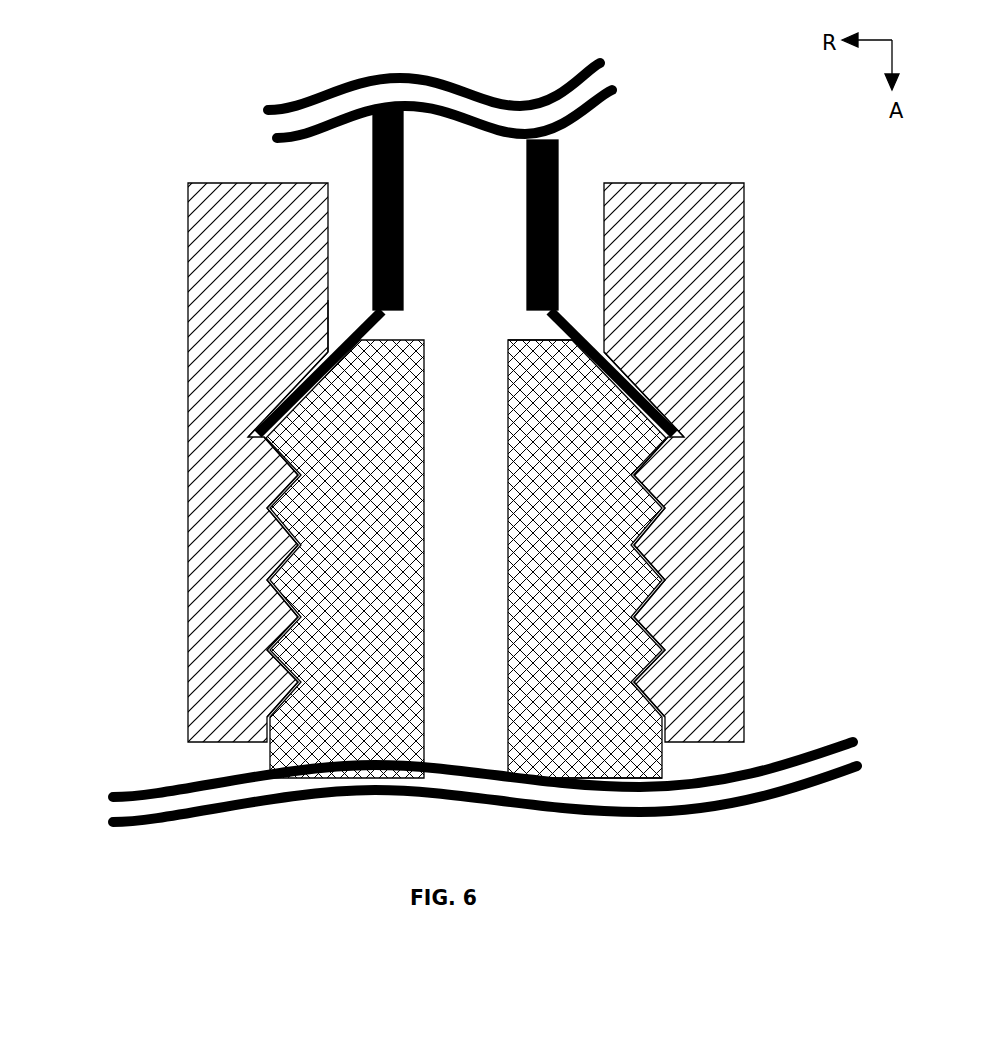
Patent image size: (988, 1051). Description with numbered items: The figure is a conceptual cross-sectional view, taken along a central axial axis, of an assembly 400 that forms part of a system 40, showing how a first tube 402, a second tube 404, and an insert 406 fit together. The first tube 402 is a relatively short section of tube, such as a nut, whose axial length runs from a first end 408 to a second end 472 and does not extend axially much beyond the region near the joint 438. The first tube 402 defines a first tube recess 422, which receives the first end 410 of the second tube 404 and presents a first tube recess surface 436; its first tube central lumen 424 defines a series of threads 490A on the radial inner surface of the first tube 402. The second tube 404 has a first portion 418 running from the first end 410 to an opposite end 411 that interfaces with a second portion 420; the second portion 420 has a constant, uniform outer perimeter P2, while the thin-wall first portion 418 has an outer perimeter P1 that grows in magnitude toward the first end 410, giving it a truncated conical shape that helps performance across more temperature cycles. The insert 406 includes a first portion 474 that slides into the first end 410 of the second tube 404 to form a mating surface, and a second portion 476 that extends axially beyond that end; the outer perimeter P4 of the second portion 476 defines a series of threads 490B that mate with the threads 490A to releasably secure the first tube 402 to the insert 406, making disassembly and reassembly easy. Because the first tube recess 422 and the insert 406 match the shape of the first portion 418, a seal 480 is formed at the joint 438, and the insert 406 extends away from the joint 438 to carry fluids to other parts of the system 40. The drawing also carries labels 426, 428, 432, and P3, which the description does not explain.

The system 40 is at (60, 73).
The assembly 400 is at (78, 160).
The seal 480 is at (93, 295).
The joint 438 is at (158, 280).
The first tube 402 is at (222, 338).
The first end 408 is at (700, 183).
The second end 472 is at (222, 729).
The second tube 404 is at (558, 140).
The second portion 420 is at (558, 166).
The opposite end 411 is at (388, 310).
The flow direction 426 is at (462, 165).
The first end 410 is at (254, 437).
The first portion 418 is at (637, 382).
The first tube recess 422 is at (268, 405).
The first tube recess surface 436 is at (678, 438).
The series of threads 490A is at (297, 612).
The series of threads 490B is at (653, 510).
The insert top surface 432 is at (530, 340).
The first portion 474 is at (530, 387).
The second portion 476 is at (528, 640).
The insert 406 is at (643, 730).
The first tube central lumen 424 is at (448, 738).
The second flow direction 428 is at (488, 748).
The outer perimeter P1 is at (558, 307).
The outer perimeter P2 is at (557, 243).
The point P3 is at (327, 338).
The outer perimeter P4 is at (330, 370).